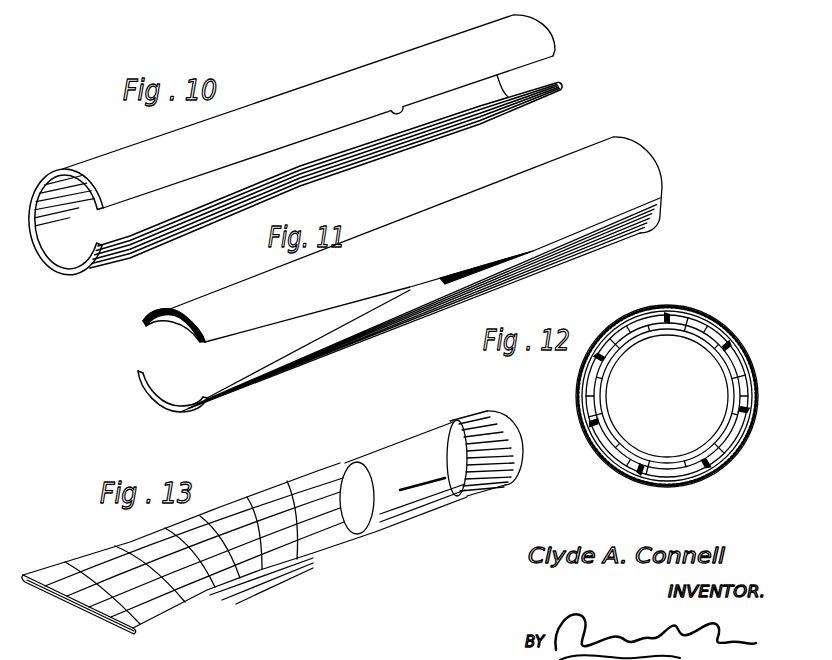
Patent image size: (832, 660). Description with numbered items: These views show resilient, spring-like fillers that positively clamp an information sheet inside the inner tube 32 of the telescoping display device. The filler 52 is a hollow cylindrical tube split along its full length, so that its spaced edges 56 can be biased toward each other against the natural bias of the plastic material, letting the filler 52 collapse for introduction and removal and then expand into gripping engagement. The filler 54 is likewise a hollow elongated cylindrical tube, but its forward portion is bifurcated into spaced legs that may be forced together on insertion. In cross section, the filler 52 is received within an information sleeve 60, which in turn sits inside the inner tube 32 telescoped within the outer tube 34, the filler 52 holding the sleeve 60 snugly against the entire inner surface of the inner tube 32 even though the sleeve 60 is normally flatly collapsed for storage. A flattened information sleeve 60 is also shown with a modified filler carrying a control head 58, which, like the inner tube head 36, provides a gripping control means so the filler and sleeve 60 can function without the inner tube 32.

In FIG. 12, the inner tube 32 is at (737, 360).
In FIG. 12, the outer tube 34 is at (667, 312).
In FIG. 12, the inner tube head 36 is at (606, 332).
In FIG. 10, the filler 52 is at (563, 91).
In FIG. 12, the filler 52 is at (705, 356).
In FIG. 11, the filler 54 is at (666, 187).
In FIG. 10, the spaced edges 56 is at (392, 111).
In FIG. 13, the control head 58 is at (517, 457).
In FIG. 12, the information sleeve 60 is at (702, 331).
In FIG. 13, the information sleeve 60 is at (203, 602).